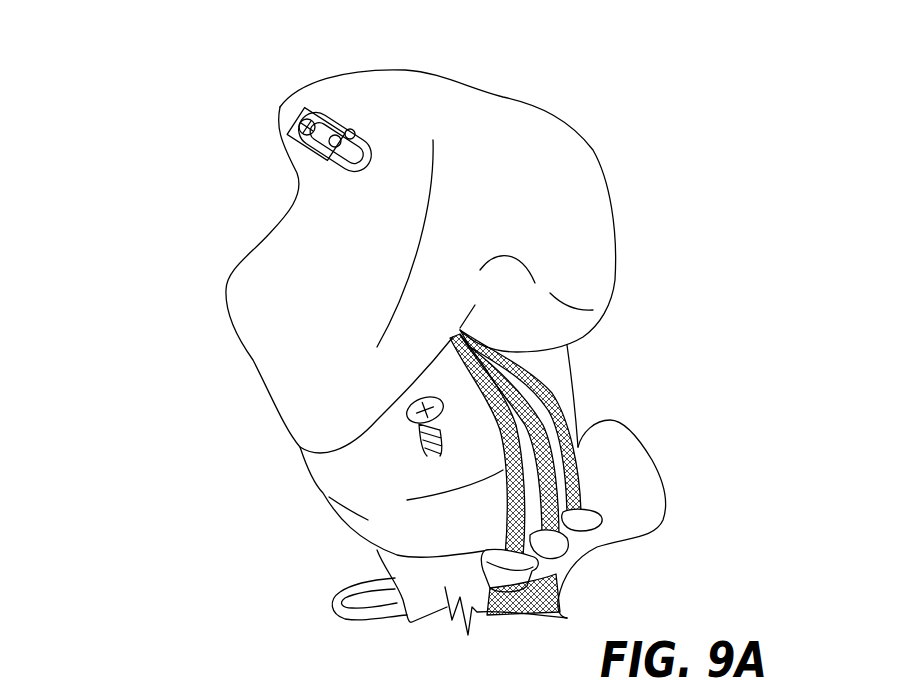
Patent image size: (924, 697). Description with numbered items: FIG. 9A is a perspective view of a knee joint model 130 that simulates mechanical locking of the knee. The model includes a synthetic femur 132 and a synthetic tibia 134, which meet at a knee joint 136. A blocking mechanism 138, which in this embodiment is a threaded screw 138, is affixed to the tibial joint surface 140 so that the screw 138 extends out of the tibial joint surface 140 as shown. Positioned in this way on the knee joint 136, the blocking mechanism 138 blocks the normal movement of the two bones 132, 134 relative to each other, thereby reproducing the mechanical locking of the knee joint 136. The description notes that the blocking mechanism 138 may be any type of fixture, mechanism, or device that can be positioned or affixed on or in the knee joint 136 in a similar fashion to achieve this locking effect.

The knee joint model 130 is at (147, 180).
The synthetic femur 132 is at (405, 97).
The synthetic tibia 134 is at (445, 587).
The knee joint 136 is at (640, 360).
The blocking mechanism 138 is at (447, 412).
The tibial joint surface 140 is at (360, 473).